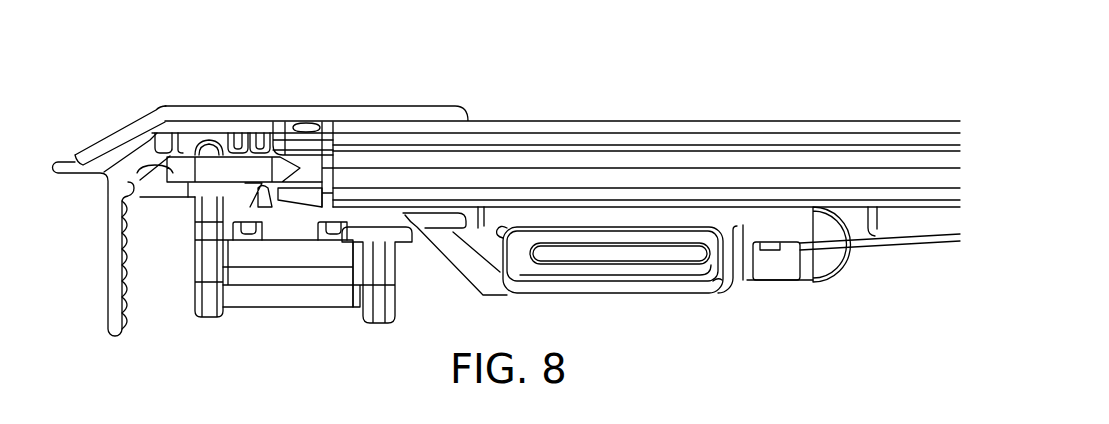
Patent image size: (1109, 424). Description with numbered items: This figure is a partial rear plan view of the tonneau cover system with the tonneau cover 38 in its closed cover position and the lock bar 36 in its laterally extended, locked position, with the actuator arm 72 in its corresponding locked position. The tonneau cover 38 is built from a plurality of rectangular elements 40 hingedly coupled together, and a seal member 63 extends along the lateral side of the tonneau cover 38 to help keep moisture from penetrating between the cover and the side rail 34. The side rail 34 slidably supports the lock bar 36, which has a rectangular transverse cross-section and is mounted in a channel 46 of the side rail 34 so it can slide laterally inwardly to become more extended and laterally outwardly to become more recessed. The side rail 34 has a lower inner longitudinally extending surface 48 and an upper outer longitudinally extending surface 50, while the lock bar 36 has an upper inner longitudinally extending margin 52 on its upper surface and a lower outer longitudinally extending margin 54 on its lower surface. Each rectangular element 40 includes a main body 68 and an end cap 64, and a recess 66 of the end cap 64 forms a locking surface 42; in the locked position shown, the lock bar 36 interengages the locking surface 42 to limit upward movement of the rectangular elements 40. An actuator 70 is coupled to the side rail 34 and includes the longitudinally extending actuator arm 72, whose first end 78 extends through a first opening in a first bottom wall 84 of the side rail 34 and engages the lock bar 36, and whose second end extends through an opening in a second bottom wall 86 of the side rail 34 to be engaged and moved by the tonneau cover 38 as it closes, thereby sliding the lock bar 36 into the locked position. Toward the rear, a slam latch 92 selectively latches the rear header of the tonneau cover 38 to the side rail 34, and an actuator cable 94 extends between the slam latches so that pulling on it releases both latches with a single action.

The side rail 34 is at (98, 258).
The lock bar 36 is at (152, 142).
The tonneau cover 38 is at (725, 72).
The rectangular element 40 is at (636, 114).
The locking surface 42 is at (298, 185).
The channel 46 is at (232, 140).
The lower inner longitudinally extending surface 48 is at (255, 153).
The upper outer longitudinally extending surface 50 is at (163, 196).
The upper inner longitudinally extending margin 52 is at (267, 150).
The lower outer longitudinally extending margin 54 is at (140, 168).
The seal member 63 is at (212, 140).
The end cap 64 is at (302, 140).
The recess 66 is at (313, 177).
The main body 68 is at (735, 135).
The actuator 70 is at (323, 313).
The actuator arm 72 is at (197, 297).
The first end 78 is at (203, 165).
The first bottom wall 84 is at (188, 190).
The second bottom wall 86 is at (415, 225).
The slam latch 92 is at (655, 302).
The actuator cable 94 is at (890, 245).